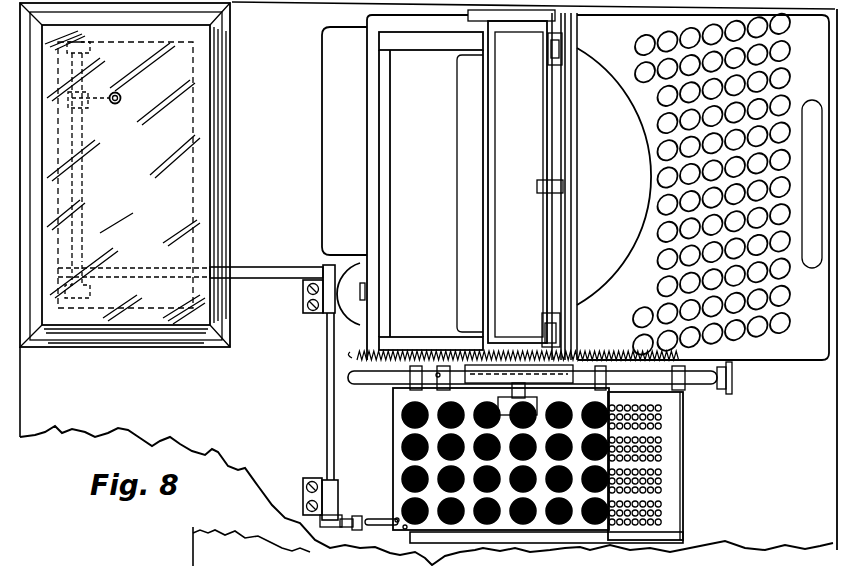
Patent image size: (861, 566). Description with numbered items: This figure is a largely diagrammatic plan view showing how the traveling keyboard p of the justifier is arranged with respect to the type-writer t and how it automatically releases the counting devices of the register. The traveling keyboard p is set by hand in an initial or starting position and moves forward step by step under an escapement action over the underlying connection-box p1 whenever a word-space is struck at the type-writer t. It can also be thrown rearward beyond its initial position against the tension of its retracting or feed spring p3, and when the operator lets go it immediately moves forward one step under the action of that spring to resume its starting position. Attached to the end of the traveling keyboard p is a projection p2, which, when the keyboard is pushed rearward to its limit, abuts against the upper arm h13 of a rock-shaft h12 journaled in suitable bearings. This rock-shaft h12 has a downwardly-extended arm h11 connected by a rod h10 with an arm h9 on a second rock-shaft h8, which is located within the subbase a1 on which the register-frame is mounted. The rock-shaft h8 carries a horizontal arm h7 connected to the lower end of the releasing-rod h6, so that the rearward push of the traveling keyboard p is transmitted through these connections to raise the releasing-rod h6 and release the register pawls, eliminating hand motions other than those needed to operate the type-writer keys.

The subbase a1 is at (205, 137).
The releasing-rod h6 is at (120, 98).
The horizontal arm h7 is at (85, 52).
The rock-shaft h8 is at (82, 166).
The arm h9 is at (88, 245).
The rod h10 is at (296, 267).
The downwardly-extended arm h11 is at (375, 253).
The rock-shaft h12 is at (333, 420).
The upper arm h13 is at (345, 515).
The type-writer t is at (337, 115).
The traveling keyboard p is at (400, 448).
The connection-box p1 is at (685, 493).
The projection p2 is at (378, 522).
The retracting or feed spring p3 is at (405, 358).